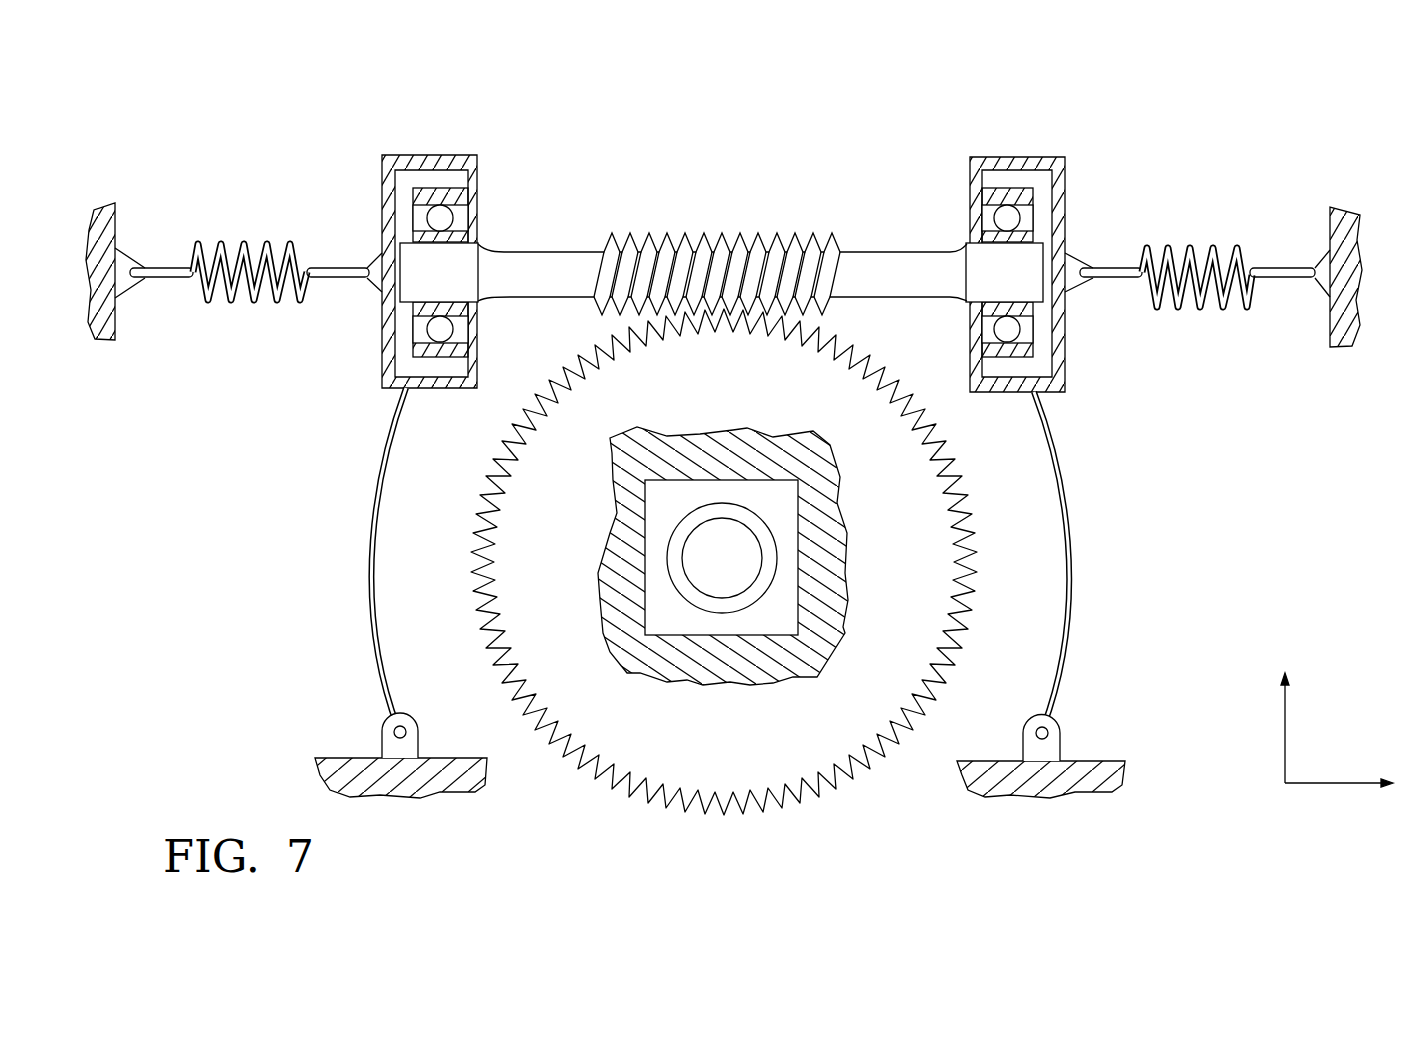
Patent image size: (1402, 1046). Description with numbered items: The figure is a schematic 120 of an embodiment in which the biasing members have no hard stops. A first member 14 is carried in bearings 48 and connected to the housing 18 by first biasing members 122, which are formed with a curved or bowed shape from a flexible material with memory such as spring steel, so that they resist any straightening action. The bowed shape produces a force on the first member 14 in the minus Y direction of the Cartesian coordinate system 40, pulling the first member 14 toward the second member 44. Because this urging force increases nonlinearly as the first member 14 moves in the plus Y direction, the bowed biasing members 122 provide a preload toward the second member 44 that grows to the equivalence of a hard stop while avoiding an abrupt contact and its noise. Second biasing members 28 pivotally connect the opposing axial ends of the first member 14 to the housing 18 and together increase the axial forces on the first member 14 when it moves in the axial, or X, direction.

The schematic 120 is at (990, 90).
The first member 14 is at (818, 240).
The housing 18 is at (116, 250).
The second biasing members 28 is at (250, 252).
The Cartesian coordinate system 40 is at (1320, 785).
The second member 44 is at (800, 803).
The bearings 48 is at (483, 190).
The first biasing members 122 is at (368, 525).